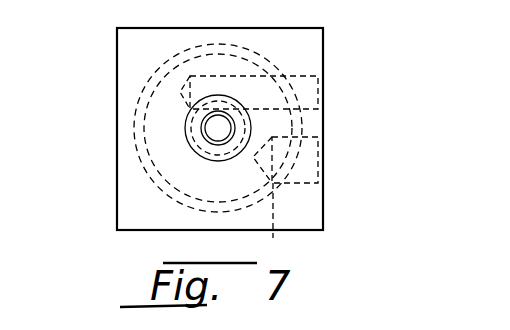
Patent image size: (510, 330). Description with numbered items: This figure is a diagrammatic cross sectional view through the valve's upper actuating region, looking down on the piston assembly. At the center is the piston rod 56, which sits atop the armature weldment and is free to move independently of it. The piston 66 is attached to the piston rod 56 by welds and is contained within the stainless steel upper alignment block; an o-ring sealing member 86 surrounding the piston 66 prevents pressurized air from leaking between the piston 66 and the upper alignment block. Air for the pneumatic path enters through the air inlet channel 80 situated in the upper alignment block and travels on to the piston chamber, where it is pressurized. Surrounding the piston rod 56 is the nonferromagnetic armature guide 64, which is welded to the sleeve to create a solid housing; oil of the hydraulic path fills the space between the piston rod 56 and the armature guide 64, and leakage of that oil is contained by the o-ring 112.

The armature guide 64 is at (238, 108).
The o-ring sealing member 86 is at (148, 90).
The piston rod 56 is at (233, 132).
The air inlet channel 80 is at (312, 137).
The o-ring 112 is at (187, 138).
The piston 66 is at (273, 238).